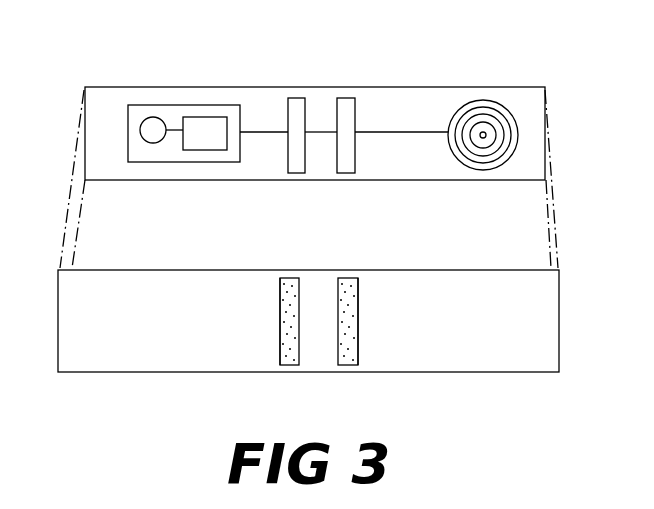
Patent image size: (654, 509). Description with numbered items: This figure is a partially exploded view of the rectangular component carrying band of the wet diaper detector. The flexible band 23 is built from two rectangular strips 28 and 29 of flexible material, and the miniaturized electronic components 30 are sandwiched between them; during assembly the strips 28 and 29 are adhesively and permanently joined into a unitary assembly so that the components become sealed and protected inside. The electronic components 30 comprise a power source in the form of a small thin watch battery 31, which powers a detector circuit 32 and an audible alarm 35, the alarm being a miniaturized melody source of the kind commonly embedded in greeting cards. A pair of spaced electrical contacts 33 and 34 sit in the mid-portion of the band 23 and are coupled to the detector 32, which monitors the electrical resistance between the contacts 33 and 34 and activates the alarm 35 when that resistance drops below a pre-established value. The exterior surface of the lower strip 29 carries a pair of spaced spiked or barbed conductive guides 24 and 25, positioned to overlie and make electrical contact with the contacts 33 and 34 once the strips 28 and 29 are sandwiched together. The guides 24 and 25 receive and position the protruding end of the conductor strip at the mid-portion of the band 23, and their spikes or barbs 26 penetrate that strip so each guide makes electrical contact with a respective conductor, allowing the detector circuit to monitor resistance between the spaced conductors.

The flexible band 23 is at (40, 233).
The conductive guide 24 is at (287, 367).
The conductive guide 25 is at (348, 367).
The spikes or barbs 26 is at (279, 354).
The rectangular strip 28 is at (102, 93).
The rectangular strip 29 is at (95, 324).
The electronic components 30 is at (240, 88).
The watch battery 31 is at (146, 118).
The detector circuit 32 is at (203, 122).
The electrical contact 33 is at (296, 103).
The electrical contact 34 is at (338, 100).
The audible alarm 35 is at (481, 138).